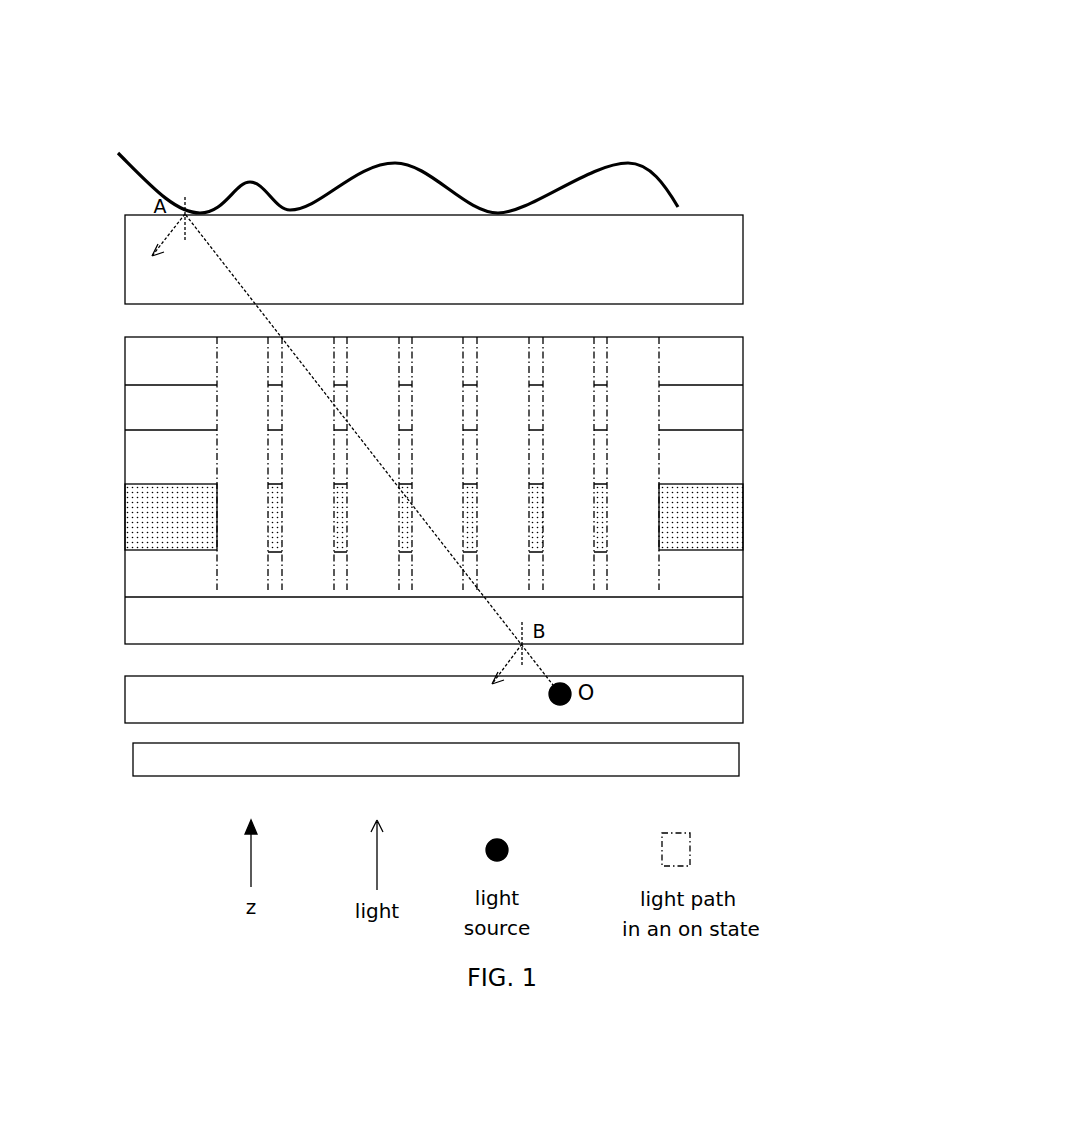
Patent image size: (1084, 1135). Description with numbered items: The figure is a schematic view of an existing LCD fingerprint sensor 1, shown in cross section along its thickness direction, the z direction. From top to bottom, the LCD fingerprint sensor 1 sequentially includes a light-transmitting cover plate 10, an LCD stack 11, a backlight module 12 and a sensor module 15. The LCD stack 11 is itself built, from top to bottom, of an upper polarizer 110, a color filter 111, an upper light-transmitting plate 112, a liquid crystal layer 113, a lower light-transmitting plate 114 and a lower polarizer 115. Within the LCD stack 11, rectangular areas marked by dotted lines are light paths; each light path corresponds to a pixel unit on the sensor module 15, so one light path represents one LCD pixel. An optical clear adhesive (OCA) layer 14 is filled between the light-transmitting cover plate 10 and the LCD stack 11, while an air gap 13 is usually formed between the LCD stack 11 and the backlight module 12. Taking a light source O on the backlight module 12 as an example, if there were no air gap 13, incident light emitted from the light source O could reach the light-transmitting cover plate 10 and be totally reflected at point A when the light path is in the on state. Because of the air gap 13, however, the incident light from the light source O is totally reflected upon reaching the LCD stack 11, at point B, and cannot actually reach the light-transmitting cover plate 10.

The LCD fingerprint sensor 1 is at (153, 108).
The light-transmitting cover plate 10 is at (745, 260).
The LCD stack 11 is at (543, 490).
The upper polarizer 110 is at (745, 355).
The color filter 111 is at (745, 404).
The upper light-transmitting plate 112 is at (745, 454).
The liquid crystal layer 113 is at (745, 517).
The lower light-transmitting plate 114 is at (745, 577).
The lower polarizer 115 is at (512, 614).
The backlight module 12 is at (745, 694).
The air gap 13 is at (142, 657).
The optical clear adhesive (OCA) layer 14 is at (722, 320).
The sensor module 15 is at (740, 760).